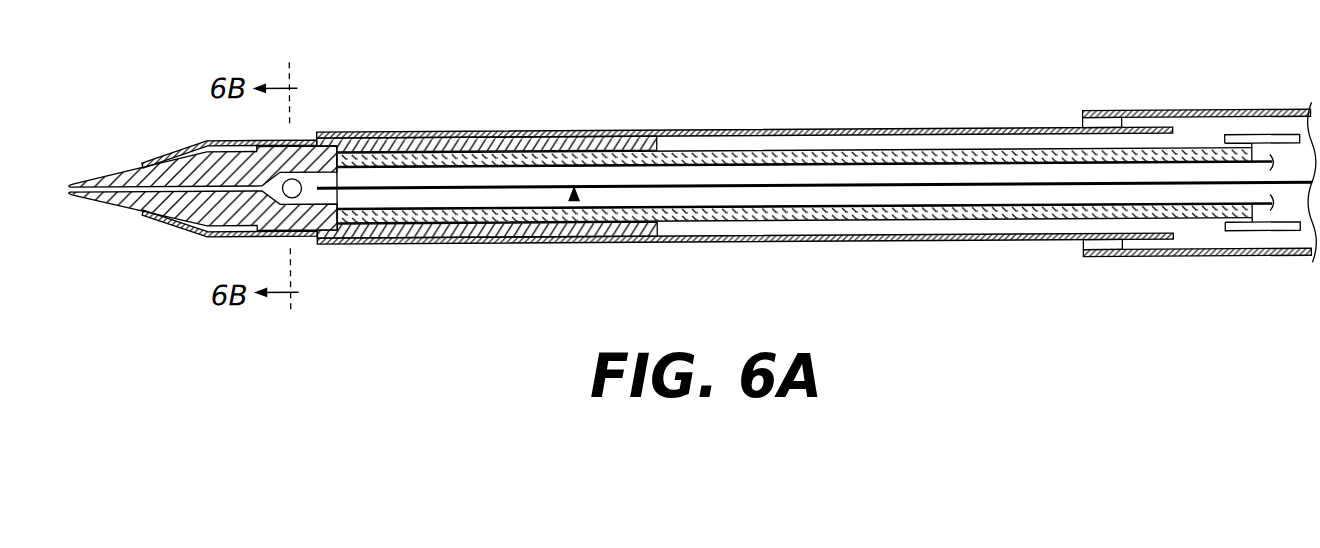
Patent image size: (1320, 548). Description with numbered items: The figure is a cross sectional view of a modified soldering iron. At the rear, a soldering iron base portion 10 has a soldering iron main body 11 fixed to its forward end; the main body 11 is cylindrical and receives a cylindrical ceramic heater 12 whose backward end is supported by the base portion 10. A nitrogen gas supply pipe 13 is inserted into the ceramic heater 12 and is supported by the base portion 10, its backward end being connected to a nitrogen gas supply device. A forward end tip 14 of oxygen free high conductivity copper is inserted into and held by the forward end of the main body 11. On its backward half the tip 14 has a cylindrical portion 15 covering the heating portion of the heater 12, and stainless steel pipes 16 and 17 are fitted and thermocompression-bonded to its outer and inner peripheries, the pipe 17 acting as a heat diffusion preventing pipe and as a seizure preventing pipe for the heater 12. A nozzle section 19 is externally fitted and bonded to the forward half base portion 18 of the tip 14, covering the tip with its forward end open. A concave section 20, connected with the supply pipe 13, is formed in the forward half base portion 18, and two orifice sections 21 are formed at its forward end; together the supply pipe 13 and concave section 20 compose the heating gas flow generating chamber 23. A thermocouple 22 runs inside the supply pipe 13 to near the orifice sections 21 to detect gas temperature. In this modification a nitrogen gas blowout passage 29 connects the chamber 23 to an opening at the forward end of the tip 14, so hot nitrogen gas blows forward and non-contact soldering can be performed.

The soldering iron base portion 10 is at (1186, 262).
The soldering iron main body 11 is at (847, 246).
The ceramic heater 12 is at (985, 224).
The nitrogen gas supply pipe 13 is at (700, 157).
The forward end tip 14 is at (132, 197).
The cylindrical portion 15 is at (456, 132).
The pipe 16 is at (540, 153).
The pipe 17 is at (385, 138).
The forward half base portion 18 is at (310, 236).
The nozzle section 19 is at (201, 140).
The concave section 20 is at (203, 236).
The orifice section 21 is at (296, 179).
The thermocouple 22 is at (853, 186).
The heating gas flow generating chamber 23 is at (576, 202).
The nitrogen gas blowout passage 29 is at (104, 185).